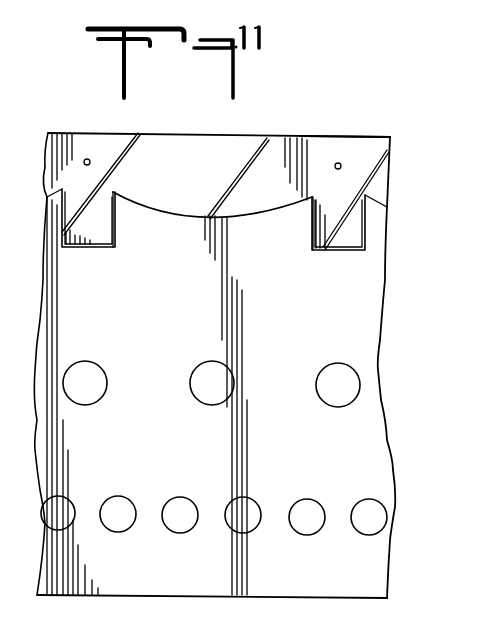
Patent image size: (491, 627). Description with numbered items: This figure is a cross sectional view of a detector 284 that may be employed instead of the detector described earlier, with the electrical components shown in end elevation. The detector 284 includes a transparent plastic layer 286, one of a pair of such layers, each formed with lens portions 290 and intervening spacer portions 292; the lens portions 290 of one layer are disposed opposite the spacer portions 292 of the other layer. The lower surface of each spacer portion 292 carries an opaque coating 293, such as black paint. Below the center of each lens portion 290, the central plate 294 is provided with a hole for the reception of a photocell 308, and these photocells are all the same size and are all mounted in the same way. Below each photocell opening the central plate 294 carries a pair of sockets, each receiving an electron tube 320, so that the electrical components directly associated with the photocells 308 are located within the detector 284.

The detector 284 is at (372, 134).
The transparent plastic layer 286 is at (382, 155).
The lens portion 290 is at (243, 208).
The spacer portion 292 is at (105, 248).
The opaque coating 293 is at (118, 238).
The central plate 294 is at (370, 302).
The photocell 308 is at (100, 385).
The electron tube 320 is at (173, 503).